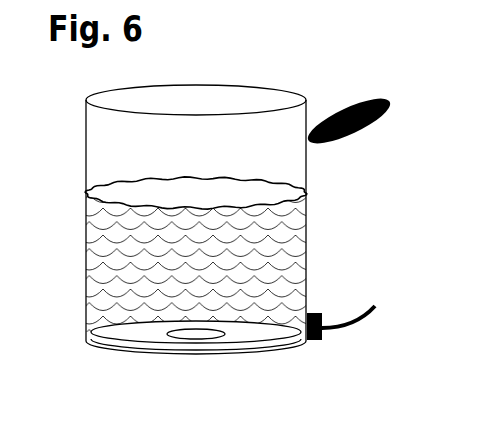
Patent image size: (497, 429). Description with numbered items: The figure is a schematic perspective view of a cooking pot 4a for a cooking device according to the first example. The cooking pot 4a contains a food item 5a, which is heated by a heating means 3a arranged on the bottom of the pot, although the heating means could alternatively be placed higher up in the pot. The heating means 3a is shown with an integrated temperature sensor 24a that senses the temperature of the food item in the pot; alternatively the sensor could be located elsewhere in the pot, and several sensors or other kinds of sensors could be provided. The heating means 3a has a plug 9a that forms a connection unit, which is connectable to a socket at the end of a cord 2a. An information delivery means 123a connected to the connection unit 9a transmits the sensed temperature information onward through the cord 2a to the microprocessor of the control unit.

The cooking pot 4a is at (308, 108).
The food item 5a is at (306, 209).
The heating means 3a is at (132, 333).
The information delivery means 123a is at (256, 340).
The temperature sensor 24a is at (190, 338).
The plug 9a is at (317, 313).
The cord 2a is at (352, 325).